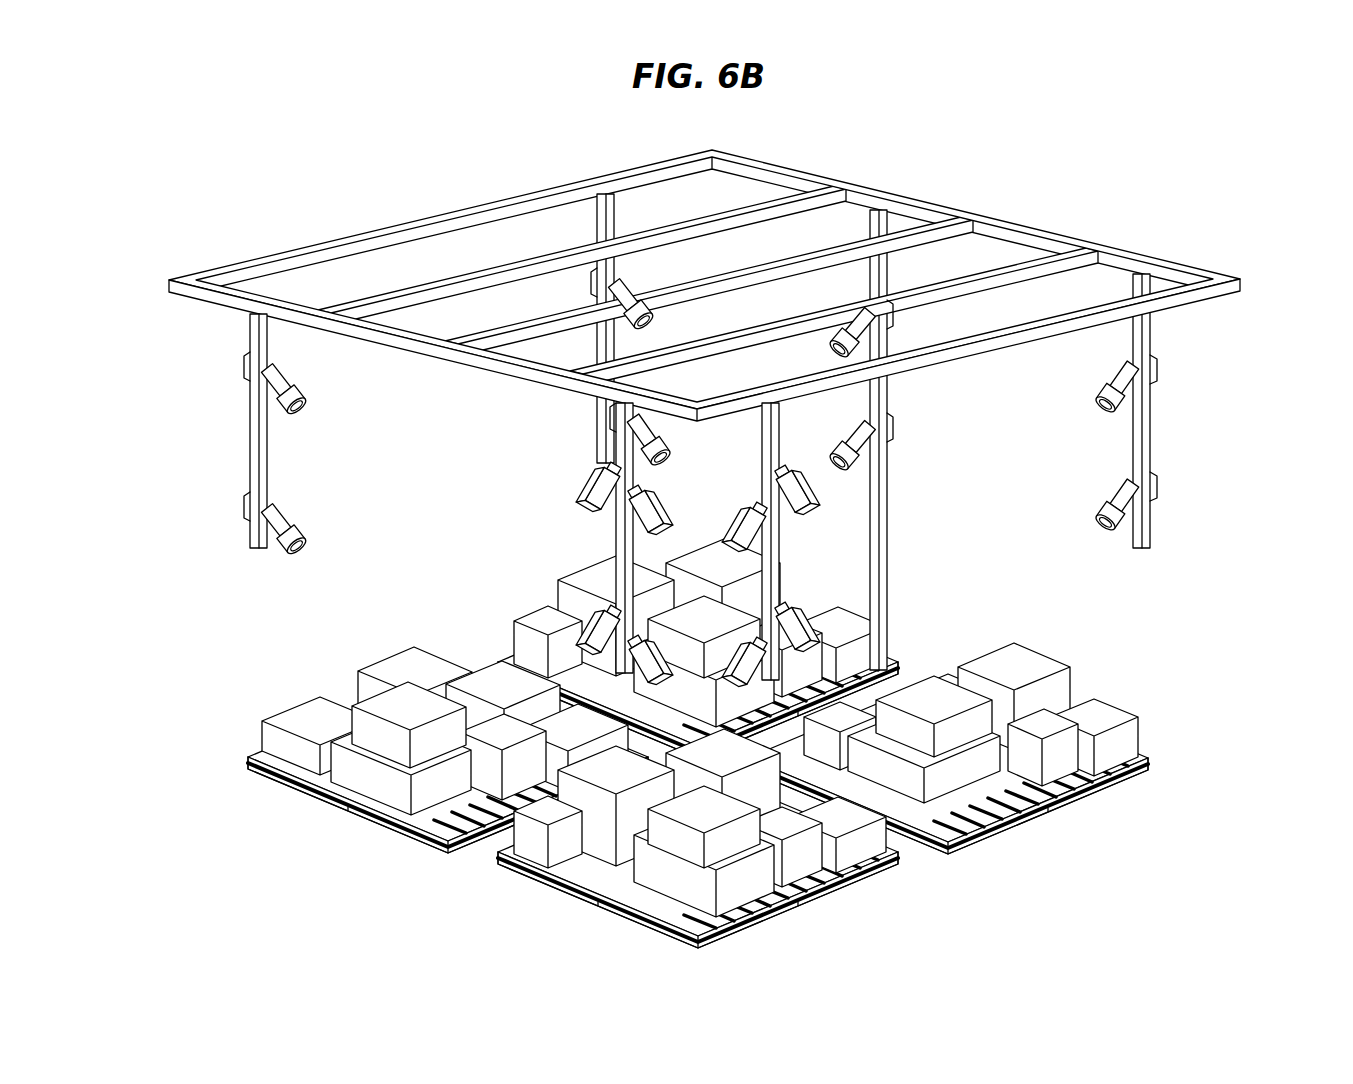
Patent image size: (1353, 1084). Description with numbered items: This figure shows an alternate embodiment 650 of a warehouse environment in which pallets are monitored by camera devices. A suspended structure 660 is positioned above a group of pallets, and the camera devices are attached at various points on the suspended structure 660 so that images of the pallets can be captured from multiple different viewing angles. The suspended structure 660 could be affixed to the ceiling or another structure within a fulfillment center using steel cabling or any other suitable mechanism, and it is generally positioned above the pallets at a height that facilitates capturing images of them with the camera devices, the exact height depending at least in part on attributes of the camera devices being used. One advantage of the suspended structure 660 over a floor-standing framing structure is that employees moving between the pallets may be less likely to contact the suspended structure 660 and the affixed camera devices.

The alternate embodiment 650 is at (950, 110).
The suspended structure 660 is at (978, 212).